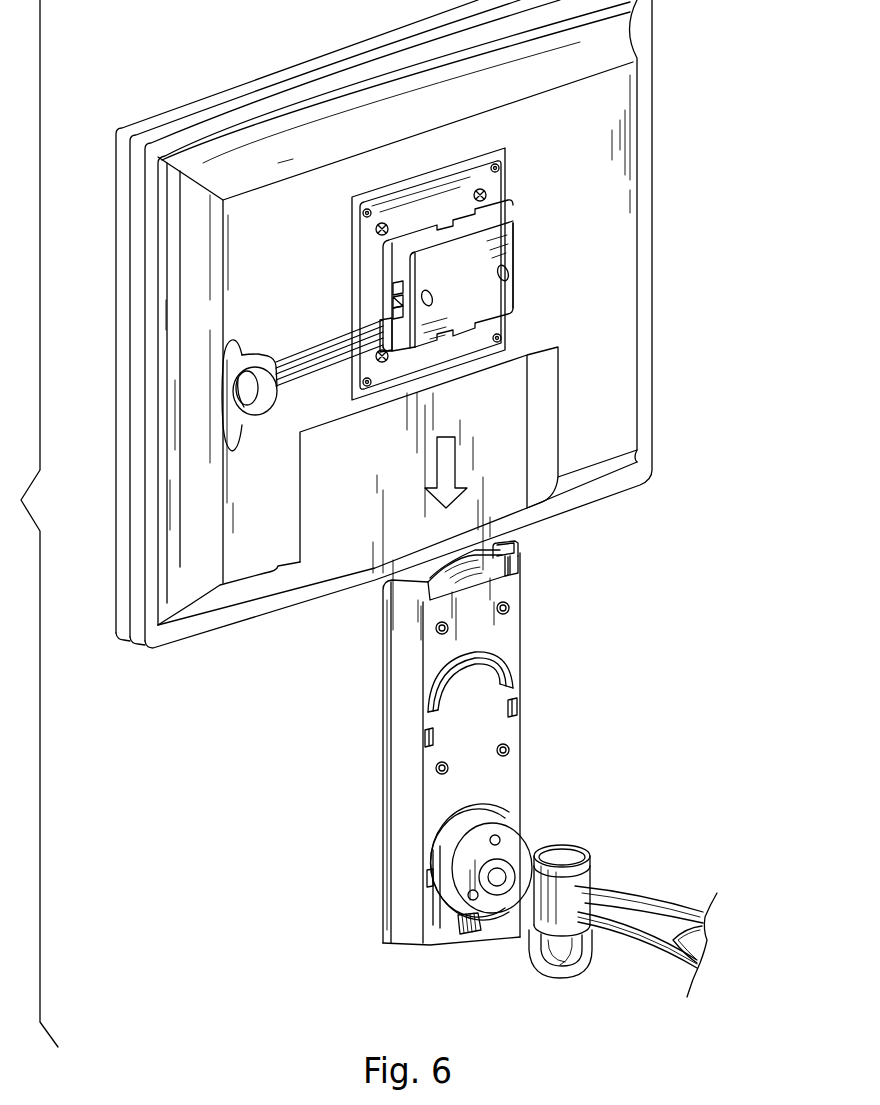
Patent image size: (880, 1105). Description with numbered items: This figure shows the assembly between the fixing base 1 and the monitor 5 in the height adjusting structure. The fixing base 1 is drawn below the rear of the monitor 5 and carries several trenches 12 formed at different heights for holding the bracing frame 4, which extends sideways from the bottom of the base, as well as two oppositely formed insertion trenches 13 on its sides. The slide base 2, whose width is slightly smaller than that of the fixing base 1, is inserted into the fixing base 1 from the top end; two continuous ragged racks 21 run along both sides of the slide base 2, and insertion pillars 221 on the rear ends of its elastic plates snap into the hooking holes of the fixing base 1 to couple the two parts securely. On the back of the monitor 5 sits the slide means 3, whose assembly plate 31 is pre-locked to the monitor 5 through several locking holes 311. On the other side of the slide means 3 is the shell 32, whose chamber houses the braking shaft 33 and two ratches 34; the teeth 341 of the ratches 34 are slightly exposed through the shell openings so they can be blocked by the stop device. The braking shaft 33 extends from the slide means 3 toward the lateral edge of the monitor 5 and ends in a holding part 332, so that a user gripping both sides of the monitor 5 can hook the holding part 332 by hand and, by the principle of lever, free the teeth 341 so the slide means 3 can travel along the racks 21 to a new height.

The fixing base 1 is at (520, 634).
The slide base 2 is at (523, 573).
The slide means 3 is at (520, 241).
The bracing frame 4 is at (595, 871).
The monitor 5 is at (637, 278).
The trenches 12 is at (508, 678).
The insertion trenches 13 is at (515, 545).
The ragged racks 21 is at (522, 559).
The assembly plate 31 is at (503, 178).
The shell 32 is at (513, 291).
The braking shaft 33 is at (335, 341).
The ratches 34 is at (392, 290).
The insertion pillars 221 is at (435, 733).
The locking holes 311 is at (500, 165).
The holding part 332 is at (245, 421).
The teeth 341 is at (393, 309).